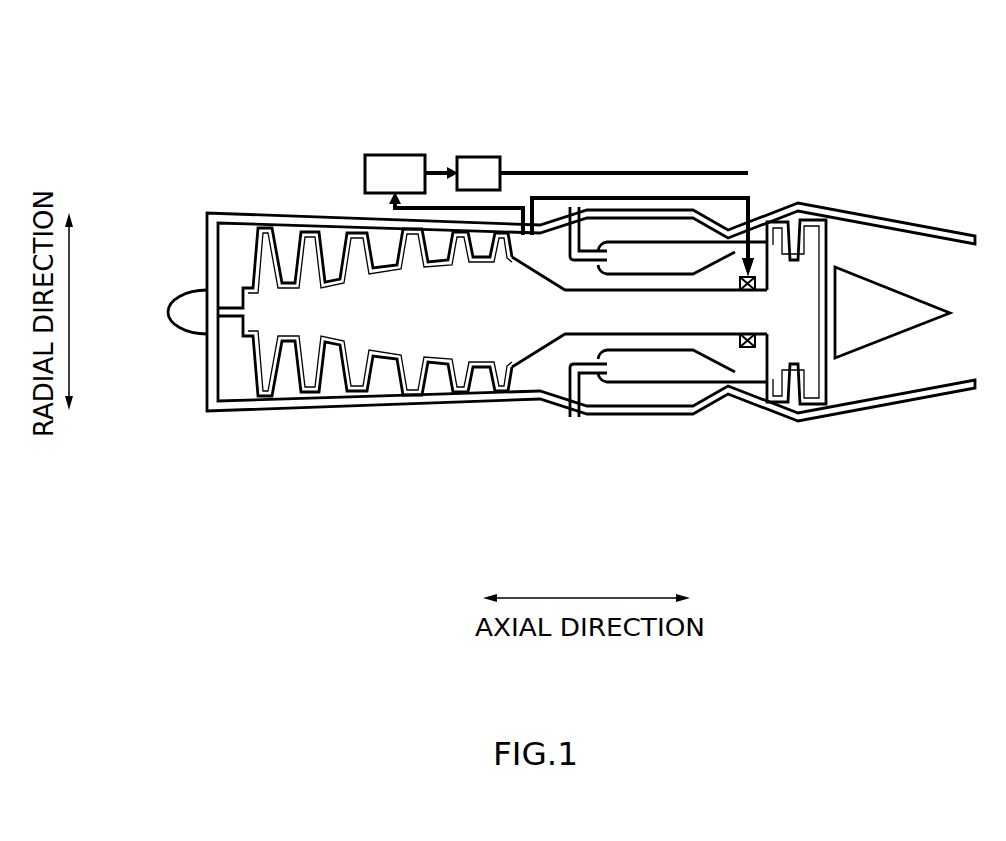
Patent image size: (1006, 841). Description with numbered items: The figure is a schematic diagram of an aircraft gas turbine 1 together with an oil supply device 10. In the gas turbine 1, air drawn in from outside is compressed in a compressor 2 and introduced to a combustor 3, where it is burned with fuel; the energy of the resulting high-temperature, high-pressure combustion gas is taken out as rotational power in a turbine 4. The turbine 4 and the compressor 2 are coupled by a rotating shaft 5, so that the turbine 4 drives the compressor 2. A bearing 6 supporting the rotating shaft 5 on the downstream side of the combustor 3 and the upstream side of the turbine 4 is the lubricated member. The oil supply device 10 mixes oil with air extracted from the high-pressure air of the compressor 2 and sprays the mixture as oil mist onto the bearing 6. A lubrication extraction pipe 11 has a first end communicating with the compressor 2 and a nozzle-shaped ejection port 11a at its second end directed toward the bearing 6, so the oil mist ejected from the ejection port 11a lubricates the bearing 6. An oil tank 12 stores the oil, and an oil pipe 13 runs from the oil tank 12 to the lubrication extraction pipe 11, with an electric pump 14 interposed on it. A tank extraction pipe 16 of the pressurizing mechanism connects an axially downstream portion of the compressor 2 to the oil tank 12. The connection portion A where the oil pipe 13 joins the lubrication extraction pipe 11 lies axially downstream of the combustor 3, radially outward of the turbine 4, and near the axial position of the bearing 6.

The gas turbine 1 is at (243, 214).
The compressor 2 is at (413, 385).
The combustor 3 is at (643, 378).
The turbine 4 is at (822, 400).
The rotating shaft 5 is at (690, 322).
The bearing 6 is at (748, 350).
The oil supply device 10 is at (610, 114).
The lubrication extraction pipe 11 is at (667, 198).
The ejection port 11a is at (757, 276).
The oil tank 12 is at (398, 155).
The oil pipe 13 is at (555, 172).
The electric pump 14 is at (480, 157).
The tank extraction pipe 16 is at (437, 206).
The connection portion A is at (752, 193).